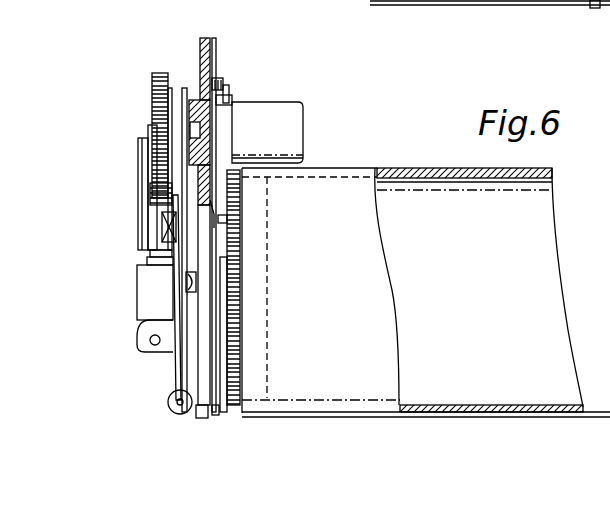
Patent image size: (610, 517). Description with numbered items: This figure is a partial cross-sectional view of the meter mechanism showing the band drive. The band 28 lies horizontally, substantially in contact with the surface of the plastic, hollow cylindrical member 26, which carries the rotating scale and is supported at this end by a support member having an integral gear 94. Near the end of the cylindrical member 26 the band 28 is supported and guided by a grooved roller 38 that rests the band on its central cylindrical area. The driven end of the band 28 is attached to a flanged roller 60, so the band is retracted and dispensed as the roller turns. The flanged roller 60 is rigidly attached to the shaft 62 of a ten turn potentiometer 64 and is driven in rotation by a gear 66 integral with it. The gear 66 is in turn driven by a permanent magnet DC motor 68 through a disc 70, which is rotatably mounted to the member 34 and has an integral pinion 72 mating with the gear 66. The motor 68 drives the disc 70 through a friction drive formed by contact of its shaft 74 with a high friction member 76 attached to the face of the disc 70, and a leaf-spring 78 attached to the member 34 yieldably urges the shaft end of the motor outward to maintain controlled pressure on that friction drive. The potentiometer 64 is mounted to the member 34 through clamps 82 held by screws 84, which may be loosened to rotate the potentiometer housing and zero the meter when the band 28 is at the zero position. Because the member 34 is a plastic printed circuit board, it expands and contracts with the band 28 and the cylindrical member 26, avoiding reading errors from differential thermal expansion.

The cylindrical member 26 is at (345, 190).
The band 28 is at (177, 224).
The member 34 is at (203, 372).
The grooved rollers 38 is at (175, 410).
The flanged roller 60 is at (183, 88).
The shaft 62 is at (150, 135).
The ten turn potentiometer 64 is at (287, 102).
The gear 66 is at (158, 82).
The permanent magnet DC motor 68 is at (150, 307).
The disc 70 is at (140, 150).
The pinion 72 is at (152, 190).
The shaft 74 is at (152, 258).
The high friction member 76 is at (162, 242).
The leaf-spring 78 is at (193, 290).
The clamps 82 is at (216, 82).
The screws 84 is at (230, 93).
The gear 94 is at (240, 238).